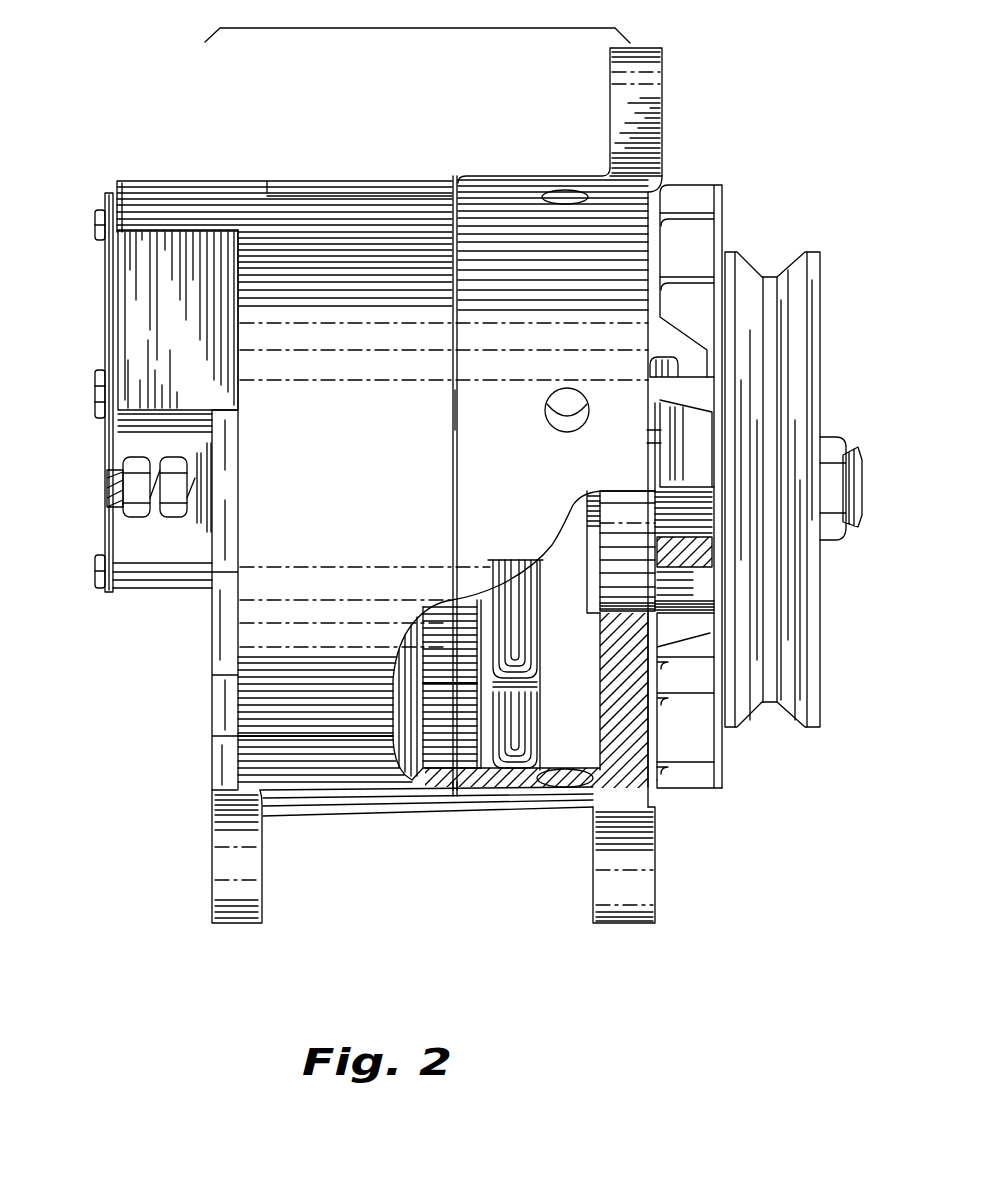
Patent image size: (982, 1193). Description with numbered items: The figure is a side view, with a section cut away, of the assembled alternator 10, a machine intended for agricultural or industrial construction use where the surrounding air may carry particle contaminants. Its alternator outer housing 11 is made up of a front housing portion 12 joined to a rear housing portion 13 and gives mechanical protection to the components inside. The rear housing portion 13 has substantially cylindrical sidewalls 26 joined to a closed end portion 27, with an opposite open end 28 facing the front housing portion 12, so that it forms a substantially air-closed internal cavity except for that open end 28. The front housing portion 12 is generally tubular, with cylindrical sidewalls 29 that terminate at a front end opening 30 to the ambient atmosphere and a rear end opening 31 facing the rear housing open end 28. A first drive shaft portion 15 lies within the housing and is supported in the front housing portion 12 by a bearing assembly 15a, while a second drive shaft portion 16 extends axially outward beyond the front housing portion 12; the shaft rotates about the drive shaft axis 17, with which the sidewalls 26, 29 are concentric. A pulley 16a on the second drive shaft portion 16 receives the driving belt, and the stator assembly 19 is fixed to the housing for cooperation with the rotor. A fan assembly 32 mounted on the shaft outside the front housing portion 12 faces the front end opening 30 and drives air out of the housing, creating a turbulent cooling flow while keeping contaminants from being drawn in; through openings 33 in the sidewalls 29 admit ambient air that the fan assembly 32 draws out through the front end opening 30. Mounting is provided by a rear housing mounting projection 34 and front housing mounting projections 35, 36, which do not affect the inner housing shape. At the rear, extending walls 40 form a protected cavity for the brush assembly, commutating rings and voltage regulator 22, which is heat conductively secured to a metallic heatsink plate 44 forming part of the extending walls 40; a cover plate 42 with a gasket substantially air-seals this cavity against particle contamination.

The alternator 10 is at (502, 925).
The alternator outer housing 11 is at (417, 21).
The front housing portion 12 is at (508, 183).
The rear housing portion 13 is at (300, 213).
The first drive shaft portion 15 is at (584, 510).
The bearing assembly 15a is at (603, 567).
The second drive shaft portion 16 is at (841, 455).
The pulley 16a is at (812, 250).
The drive shaft axis 17 is at (866, 487).
The stator assembly 19 is at (533, 690).
The voltage regulator 22 is at (157, 182).
The cylindrical sidewalls 26 is at (386, 190).
The closed end portion 27 is at (205, 645).
The open end 28 is at (456, 168).
The cylindrical sidewalls 29 is at (478, 402).
The front end opening 30 is at (683, 172).
The rear end opening 31 is at (455, 808).
The fan assembly 32 is at (697, 757).
The through openings 33 is at (566, 190).
The rear housing mounting projection 34 is at (212, 810).
The front housing mounting projection 35 is at (662, 93).
The front housing mounting projection 36 is at (652, 878).
The extending walls 40 is at (143, 253).
The cover plate 42 is at (101, 592).
The metallic heatsink plate 44 is at (203, 182).